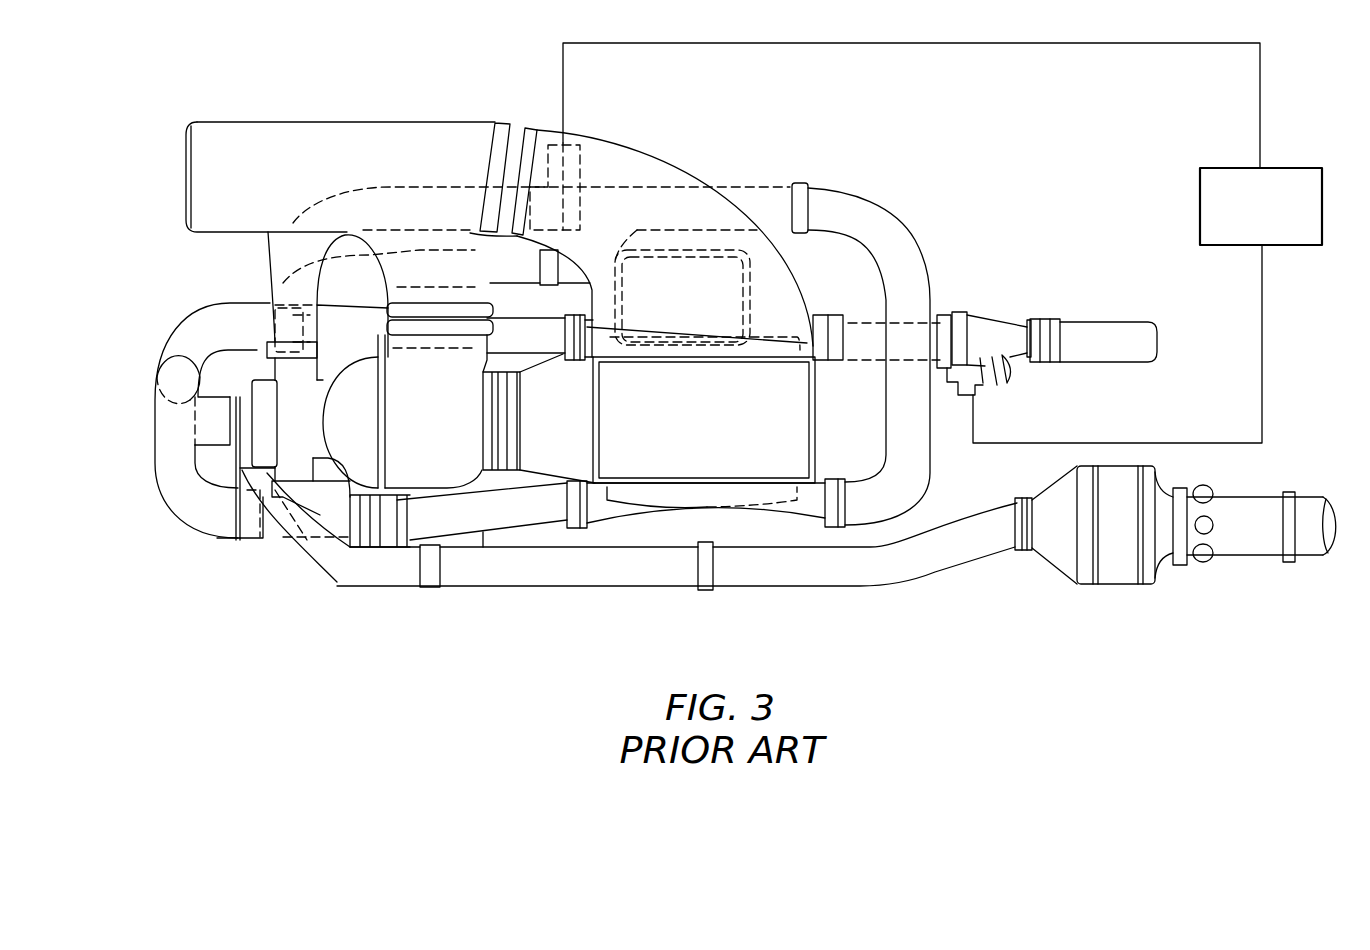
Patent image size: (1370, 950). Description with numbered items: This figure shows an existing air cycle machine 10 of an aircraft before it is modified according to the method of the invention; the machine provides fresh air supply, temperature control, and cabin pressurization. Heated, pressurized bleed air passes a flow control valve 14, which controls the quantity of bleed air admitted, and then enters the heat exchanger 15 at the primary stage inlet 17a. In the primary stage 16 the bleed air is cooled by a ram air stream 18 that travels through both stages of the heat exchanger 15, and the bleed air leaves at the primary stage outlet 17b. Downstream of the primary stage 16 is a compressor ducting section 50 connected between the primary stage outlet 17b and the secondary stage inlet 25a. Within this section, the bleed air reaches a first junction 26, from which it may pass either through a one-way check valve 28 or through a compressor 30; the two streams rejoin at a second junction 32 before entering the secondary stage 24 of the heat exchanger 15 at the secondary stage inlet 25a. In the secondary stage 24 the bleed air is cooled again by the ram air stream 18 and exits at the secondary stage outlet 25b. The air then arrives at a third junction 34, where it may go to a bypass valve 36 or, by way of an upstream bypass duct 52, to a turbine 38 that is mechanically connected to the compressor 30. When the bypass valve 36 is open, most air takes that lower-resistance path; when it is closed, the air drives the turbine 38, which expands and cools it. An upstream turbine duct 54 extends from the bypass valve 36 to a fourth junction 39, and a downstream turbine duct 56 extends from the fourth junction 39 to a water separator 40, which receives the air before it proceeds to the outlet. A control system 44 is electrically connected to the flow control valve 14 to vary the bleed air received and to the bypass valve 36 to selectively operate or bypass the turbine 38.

The air cycle machine 10 is at (297, 103).
The flow control valve 14 is at (978, 393).
The heat exchanger 15 is at (704, 420).
The primary stage 16 is at (762, 326).
The primary stage inlet 17a is at (920, 250).
The primary stage outlet 17b is at (577, 360).
The ram air stream 18 is at (358, 124).
The secondary stage 24 is at (648, 520).
The secondary stage inlet 25a is at (572, 529).
The secondary stage outlet 25b is at (840, 528).
The first junction 26 is at (156, 348).
The one-way check valve 28 is at (272, 540).
The compressor 30 is at (258, 380).
The second junction 32 is at (523, 587).
The third junction 34 is at (637, 187).
The bypass valve 36 is at (575, 158).
The turbine 38 is at (431, 360).
The fourth junction 39 is at (340, 585).
The water separator 40 is at (1123, 584).
The control system 44 is at (1198, 192).
The compressor ducting section 50 is at (207, 540).
The upstream bypass duct 52 is at (637, 230).
The upstream turbine duct 54 is at (417, 187).
The downstream turbine duct 56 is at (463, 587).